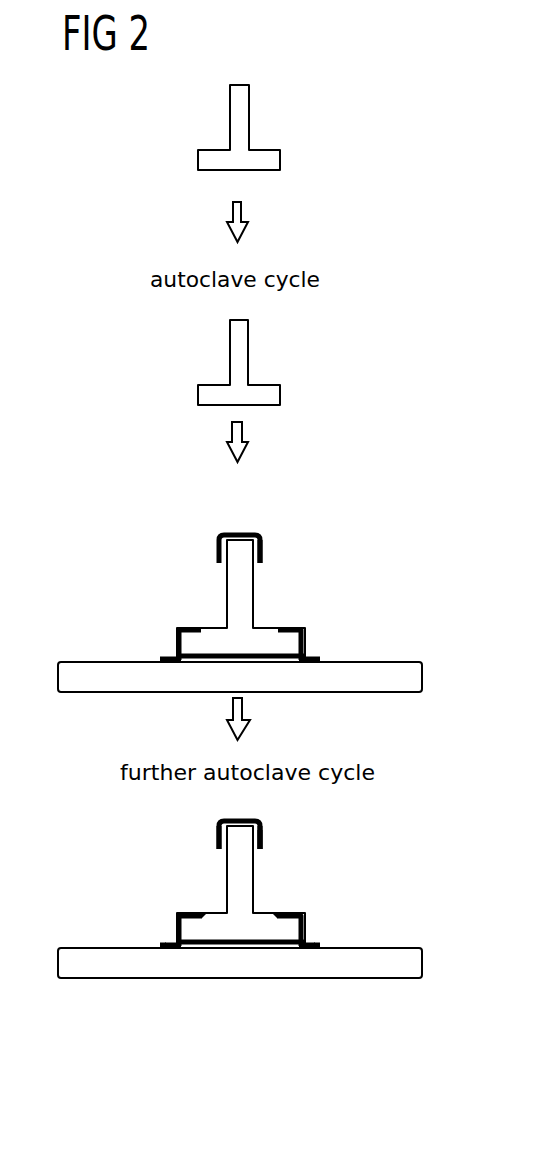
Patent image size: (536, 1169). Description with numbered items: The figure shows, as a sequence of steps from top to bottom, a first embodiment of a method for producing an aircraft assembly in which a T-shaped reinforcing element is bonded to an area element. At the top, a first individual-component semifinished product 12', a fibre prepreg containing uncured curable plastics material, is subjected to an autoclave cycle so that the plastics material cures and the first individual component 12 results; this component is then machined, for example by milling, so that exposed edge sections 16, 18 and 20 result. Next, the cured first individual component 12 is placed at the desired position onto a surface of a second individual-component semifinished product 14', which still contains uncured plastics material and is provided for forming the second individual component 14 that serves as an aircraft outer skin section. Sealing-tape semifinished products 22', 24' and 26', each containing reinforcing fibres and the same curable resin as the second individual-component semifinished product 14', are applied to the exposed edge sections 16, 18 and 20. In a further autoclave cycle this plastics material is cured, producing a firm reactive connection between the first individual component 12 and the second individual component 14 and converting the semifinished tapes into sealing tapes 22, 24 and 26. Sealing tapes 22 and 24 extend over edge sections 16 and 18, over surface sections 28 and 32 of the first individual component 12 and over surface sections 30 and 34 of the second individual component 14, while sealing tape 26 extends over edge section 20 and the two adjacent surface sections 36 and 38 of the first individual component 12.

The first individual-component semifinished product 12' is at (255, 127).
The first individual component 12 is at (243, 631).
The second individual-component semifinished product 14' is at (245, 647).
The second individual component 14 is at (243, 936).
The exposed edge section 16 is at (173, 648).
The exposed edge section 18 is at (305, 650).
The exposed edge section 20 is at (238, 535).
The sealing-tape semifinished product 22' is at (168, 619).
The sealing tape 22 is at (169, 906).
The sealing-tape semifinished product 24' is at (323, 618).
The sealing tape 24 is at (331, 909).
The sealing-tape semifinished product 26' is at (286, 530).
The sealing tape 26 is at (292, 824).
The surface section 28 is at (201, 911).
The surface section 30 is at (165, 949).
The surface section 32 is at (282, 910).
The surface section 34 is at (310, 949).
The surface section 36 is at (216, 838).
The surface section 38 is at (262, 840).